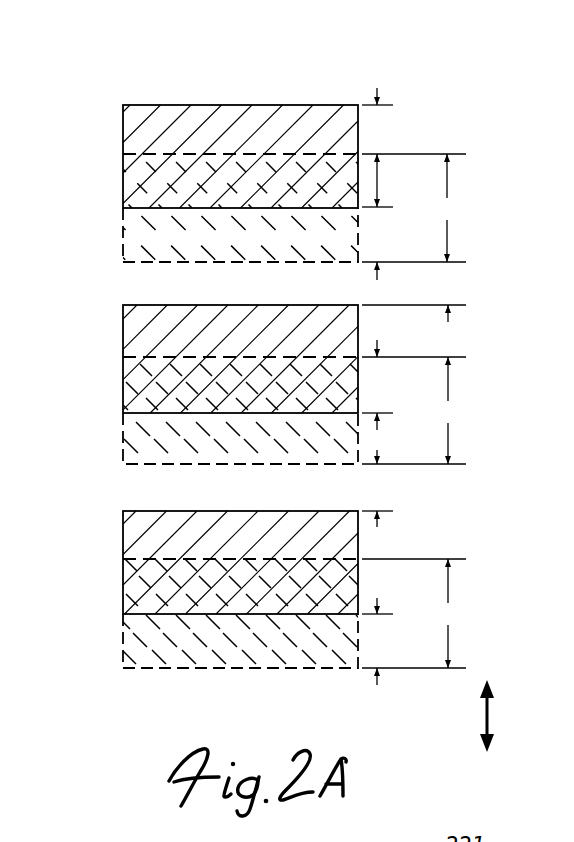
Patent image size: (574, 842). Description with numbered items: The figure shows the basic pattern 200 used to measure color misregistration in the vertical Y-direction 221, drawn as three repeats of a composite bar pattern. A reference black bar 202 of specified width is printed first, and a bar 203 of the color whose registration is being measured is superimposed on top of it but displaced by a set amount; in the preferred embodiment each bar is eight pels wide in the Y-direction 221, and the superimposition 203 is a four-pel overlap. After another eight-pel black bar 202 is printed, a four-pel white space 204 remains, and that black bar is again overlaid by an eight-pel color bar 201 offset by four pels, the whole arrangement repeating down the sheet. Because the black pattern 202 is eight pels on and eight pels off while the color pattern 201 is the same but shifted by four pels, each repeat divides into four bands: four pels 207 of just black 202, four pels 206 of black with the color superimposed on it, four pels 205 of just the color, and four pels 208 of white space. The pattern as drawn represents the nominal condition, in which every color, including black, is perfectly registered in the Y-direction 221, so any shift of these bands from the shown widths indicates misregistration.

The basic pattern 200 is at (220, 78).
The color bar 201 is at (353, 332).
The black bar 202 is at (233, 253).
The superimposition 203 is at (123, 180).
The white space 204 is at (137, 296).
The four pels of just color 205 is at (395, 123).
The four pels of black with color superimposed 206 is at (368, 181).
The four pels of just black 207 is at (373, 219).
The four pels of white space 208 is at (433, 294).
The Y-direction 221 is at (486, 716).